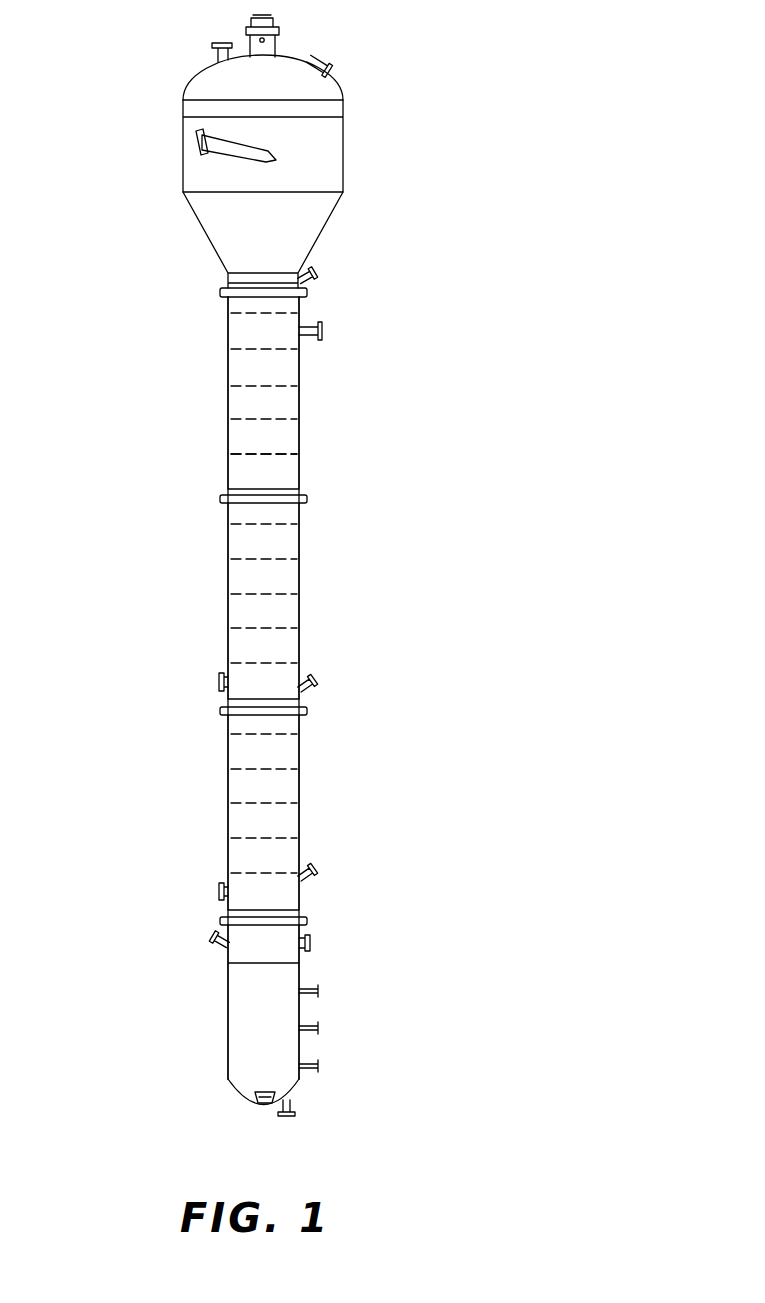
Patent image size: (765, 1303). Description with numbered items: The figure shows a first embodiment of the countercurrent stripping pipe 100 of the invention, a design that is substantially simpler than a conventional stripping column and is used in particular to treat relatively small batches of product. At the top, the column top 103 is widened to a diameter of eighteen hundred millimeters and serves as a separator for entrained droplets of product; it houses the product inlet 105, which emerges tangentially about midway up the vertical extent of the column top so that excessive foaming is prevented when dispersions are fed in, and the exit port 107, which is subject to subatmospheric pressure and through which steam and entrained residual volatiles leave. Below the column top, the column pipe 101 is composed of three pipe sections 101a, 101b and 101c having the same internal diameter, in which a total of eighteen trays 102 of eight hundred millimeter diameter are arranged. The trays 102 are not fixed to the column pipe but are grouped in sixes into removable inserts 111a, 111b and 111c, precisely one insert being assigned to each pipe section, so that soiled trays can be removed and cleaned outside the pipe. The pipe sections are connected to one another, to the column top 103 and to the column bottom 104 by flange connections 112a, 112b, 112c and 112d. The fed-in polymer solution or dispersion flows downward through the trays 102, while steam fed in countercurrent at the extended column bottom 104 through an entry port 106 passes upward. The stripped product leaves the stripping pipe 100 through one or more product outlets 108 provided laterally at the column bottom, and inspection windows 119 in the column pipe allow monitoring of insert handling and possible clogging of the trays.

The stripping pipe 100 is at (402, 84).
The column pipe 101 is at (406, 461).
The pipe section 101a is at (305, 435).
The pipe section 101b is at (305, 608).
The pipe section 101c is at (305, 853).
The tray 102 is at (252, 455).
The column top 103 is at (140, 120).
The column bottom 104 is at (216, 1014).
The product inlet 105 is at (233, 161).
The entry port 106 is at (263, 1104).
The exit port 107 is at (281, 42).
The product outlet 108 is at (292, 1103).
The insert 111a is at (236, 401).
The insert 111b is at (236, 576).
The insert 111c is at (236, 819).
The flange connection 112a is at (309, 292).
The flange connection 112b is at (309, 504).
The flange connection 112c is at (309, 714).
The flange connection 112d is at (309, 926).
The inspection window 119 is at (218, 683).